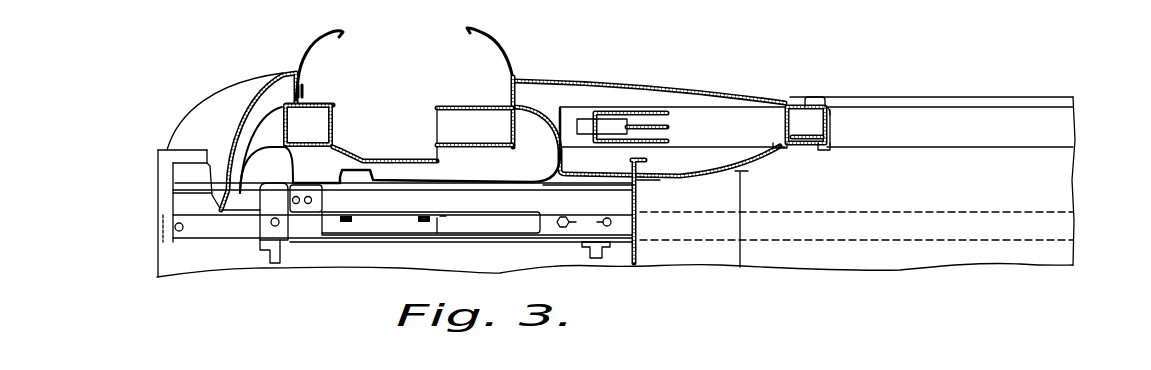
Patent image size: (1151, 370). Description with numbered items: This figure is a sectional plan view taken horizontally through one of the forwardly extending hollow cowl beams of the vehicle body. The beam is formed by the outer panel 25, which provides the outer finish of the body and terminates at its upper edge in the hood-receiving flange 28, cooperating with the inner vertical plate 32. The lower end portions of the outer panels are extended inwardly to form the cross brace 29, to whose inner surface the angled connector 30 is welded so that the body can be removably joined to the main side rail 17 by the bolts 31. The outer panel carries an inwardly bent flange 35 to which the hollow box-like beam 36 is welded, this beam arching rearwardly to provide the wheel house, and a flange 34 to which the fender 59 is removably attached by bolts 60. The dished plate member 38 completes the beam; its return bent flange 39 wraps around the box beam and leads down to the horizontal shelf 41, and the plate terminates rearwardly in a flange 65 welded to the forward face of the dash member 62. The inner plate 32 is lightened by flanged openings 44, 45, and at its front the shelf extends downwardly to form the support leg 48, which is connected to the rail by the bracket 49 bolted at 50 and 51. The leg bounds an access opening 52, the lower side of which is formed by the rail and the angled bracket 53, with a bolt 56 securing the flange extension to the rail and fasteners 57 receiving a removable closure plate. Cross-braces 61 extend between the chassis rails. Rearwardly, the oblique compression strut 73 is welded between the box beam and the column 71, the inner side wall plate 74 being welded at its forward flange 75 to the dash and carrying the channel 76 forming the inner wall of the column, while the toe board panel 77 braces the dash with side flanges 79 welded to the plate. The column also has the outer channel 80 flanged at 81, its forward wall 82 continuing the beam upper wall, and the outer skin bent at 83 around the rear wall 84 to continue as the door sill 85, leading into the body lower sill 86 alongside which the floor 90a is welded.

The main side rail 17 is at (388, 270).
The outer panel 25 is at (212, 118).
The hood-receiving flange 28 is at (165, 214).
The cross brace 29 is at (162, 278).
The angled connector 30 is at (163, 238).
The bolt 31 is at (183, 229).
The inner vertical plate 32 is at (355, 155).
The flange 34 is at (301, 92).
The inwardly bent flange 35 is at (318, 103).
The hollow box-like beam 36 is at (335, 122).
The dished plate member 38 is at (255, 92).
The return bent flange 39 is at (276, 132).
The horizontal shelf 41 is at (475, 222).
The opening 44 is at (535, 178).
The opening 45 is at (604, 168).
The support leg 48 is at (337, 216).
The bracket 49 is at (300, 195).
The bolt 50 is at (272, 220).
The bolt 51 is at (308, 204).
The opening 52 is at (432, 228).
The angled bracket 53 is at (447, 225).
The bolt 56 is at (584, 222).
The fastener 57 is at (428, 225).
The fender 59 is at (316, 40).
The bolt 60 is at (503, 88).
The cross-brace 61 is at (266, 260).
The dash member 62 is at (645, 212).
The flange 65 is at (620, 186).
The column 71 is at (833, 110).
The compression strut 73 is at (627, 126).
The inner side wall plate 74 is at (745, 170).
The forward flange 75 is at (640, 183).
The channel 76 is at (815, 137).
The toe board panel 77 is at (712, 262).
The side flange 79 is at (742, 195).
The outer channel 80 is at (815, 98).
The flange 81 is at (780, 145).
The forward wall 82 is at (790, 110).
The bend 83 is at (828, 148).
The rear wall 84 is at (830, 112).
The door sill 85 is at (924, 150).
The body lower sill 86 is at (1022, 112).
The floor 90a is at (1073, 200).